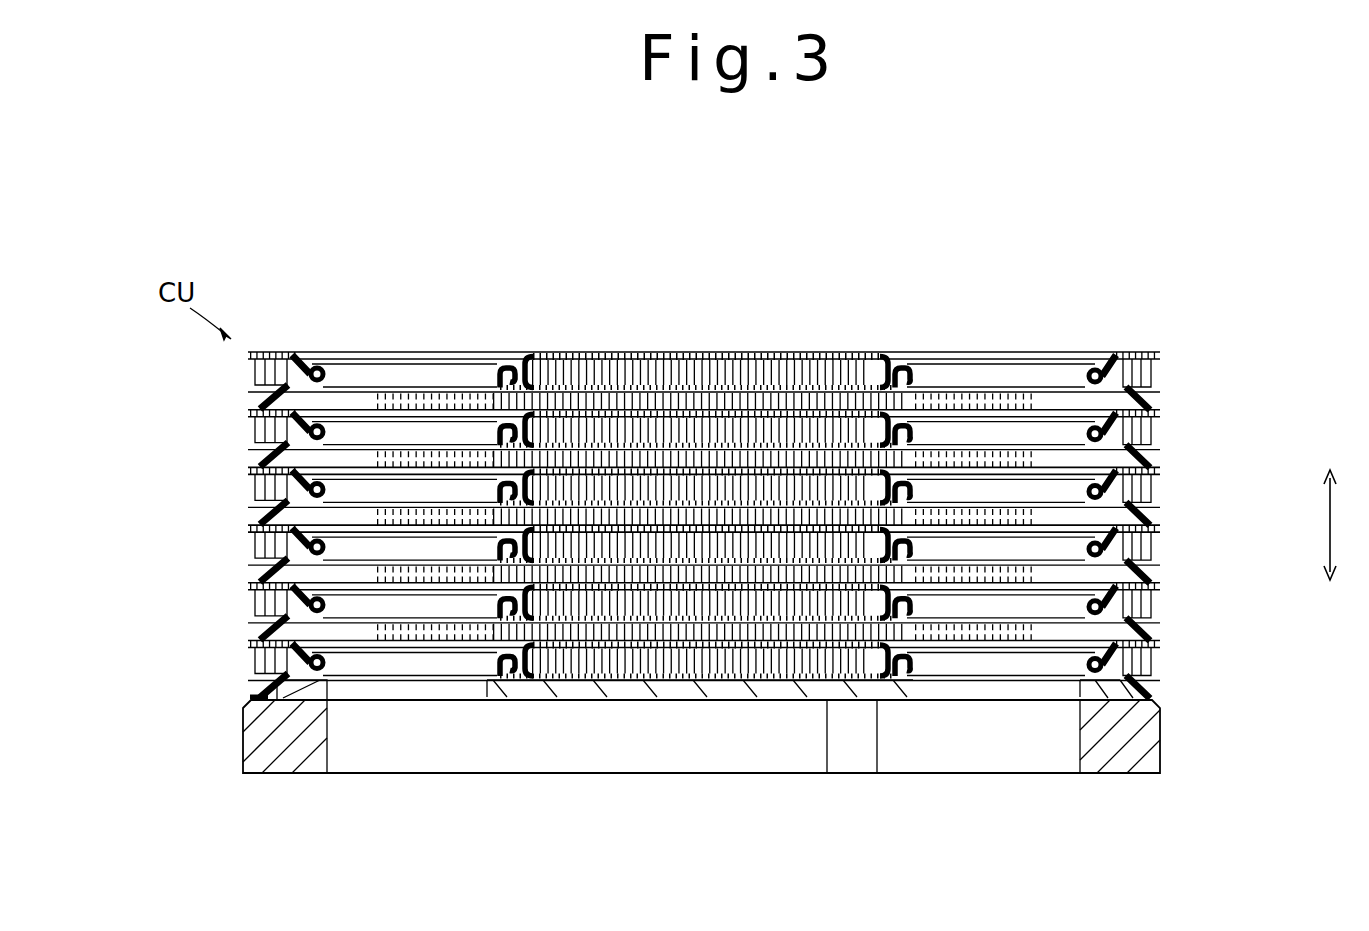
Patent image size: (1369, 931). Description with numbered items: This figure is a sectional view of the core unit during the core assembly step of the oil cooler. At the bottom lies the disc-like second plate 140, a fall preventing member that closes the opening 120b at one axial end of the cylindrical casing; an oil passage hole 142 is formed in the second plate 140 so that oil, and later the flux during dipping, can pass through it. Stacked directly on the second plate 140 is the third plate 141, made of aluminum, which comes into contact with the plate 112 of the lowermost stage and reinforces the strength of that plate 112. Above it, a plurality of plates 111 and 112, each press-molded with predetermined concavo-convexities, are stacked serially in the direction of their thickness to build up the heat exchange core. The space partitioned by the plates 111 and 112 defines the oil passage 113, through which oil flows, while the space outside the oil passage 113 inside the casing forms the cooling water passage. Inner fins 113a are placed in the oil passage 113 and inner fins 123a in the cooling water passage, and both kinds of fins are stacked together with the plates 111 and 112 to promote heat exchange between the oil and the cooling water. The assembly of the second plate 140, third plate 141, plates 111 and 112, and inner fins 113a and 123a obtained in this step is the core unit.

The plate 111 is at (1137, 350).
The plate 112 is at (1143, 400).
The oil passage 113 is at (829, 402).
The inner fin 113a is at (712, 402).
The inner fin 123a is at (607, 355).
The opening 120b is at (1160, 698).
The second plate 140 is at (1150, 748).
The third plate 141 is at (302, 688).
The oil passage hole 142 is at (748, 742).